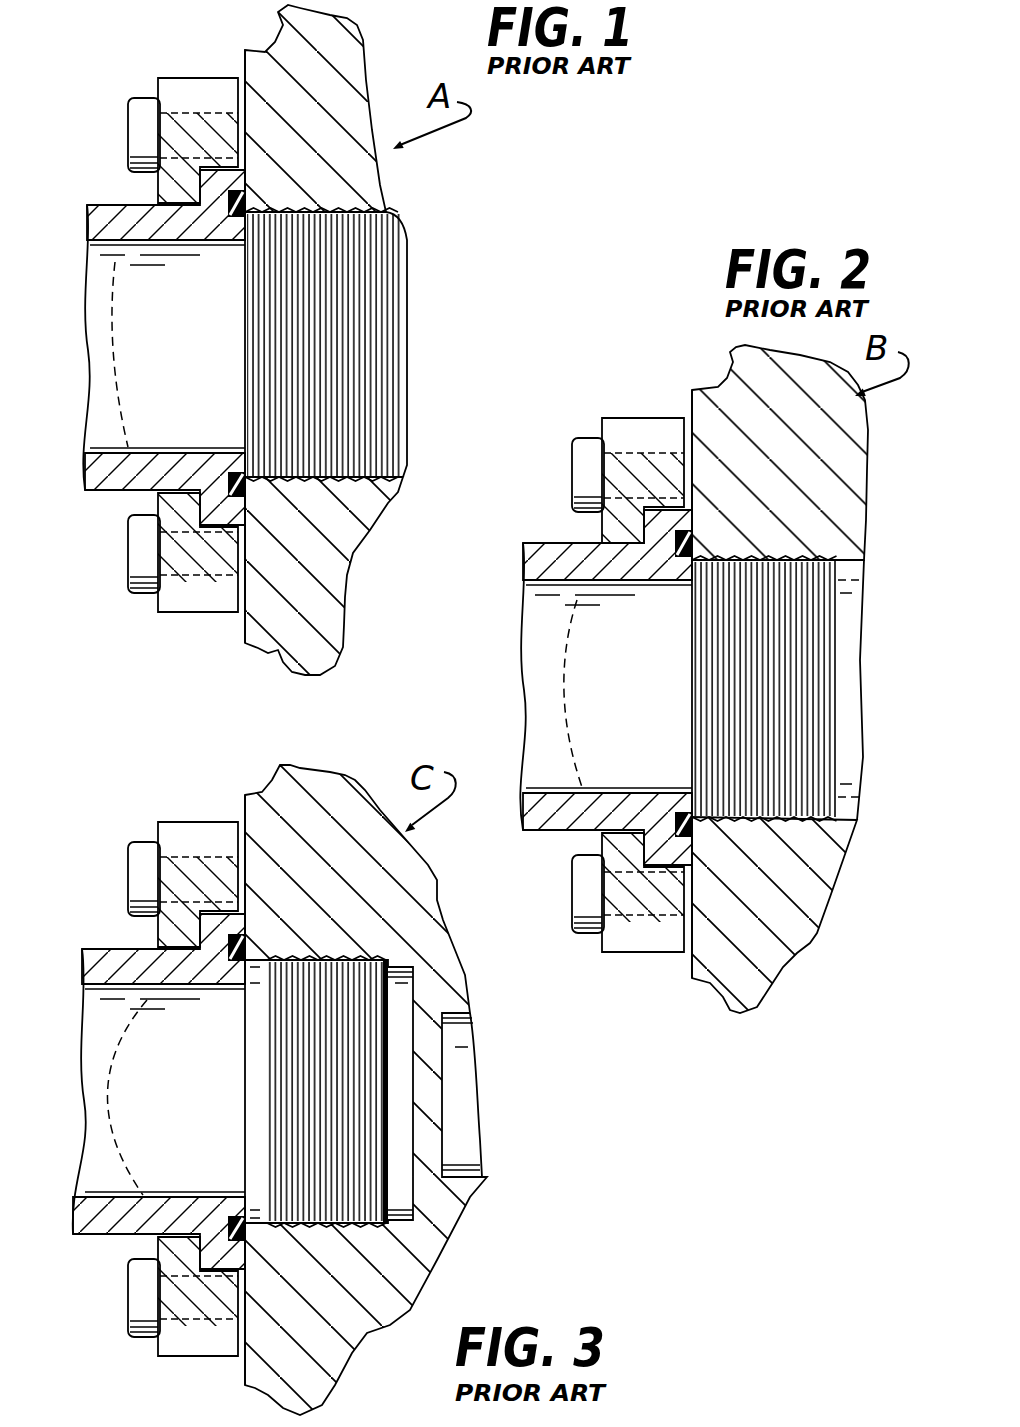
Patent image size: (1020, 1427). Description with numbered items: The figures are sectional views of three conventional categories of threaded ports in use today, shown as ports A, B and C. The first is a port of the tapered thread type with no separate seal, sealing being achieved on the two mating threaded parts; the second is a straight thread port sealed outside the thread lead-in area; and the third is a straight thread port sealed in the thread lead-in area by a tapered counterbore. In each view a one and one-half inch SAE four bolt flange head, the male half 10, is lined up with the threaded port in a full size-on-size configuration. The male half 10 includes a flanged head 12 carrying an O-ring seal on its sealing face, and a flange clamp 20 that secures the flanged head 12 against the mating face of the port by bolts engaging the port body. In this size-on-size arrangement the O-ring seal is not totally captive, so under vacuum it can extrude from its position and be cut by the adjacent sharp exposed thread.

In FIG. 1, the male half 10 is at (184, 68).
In FIG. 2, the male half 10 is at (633, 398).
In FIG. 3, the male half 10 is at (176, 808).
In FIG. 1, the flanged head 12 is at (100, 205).
In FIG. 2, the flanged head 12 is at (538, 543).
In FIG. 3, the flanged head 12 is at (100, 949).
In FIG. 1, the flange clamp 20 is at (180, 598).
In FIG. 2, the flange clamp 20 is at (652, 935).
In FIG. 3, the flange clamp 20 is at (178, 1343).